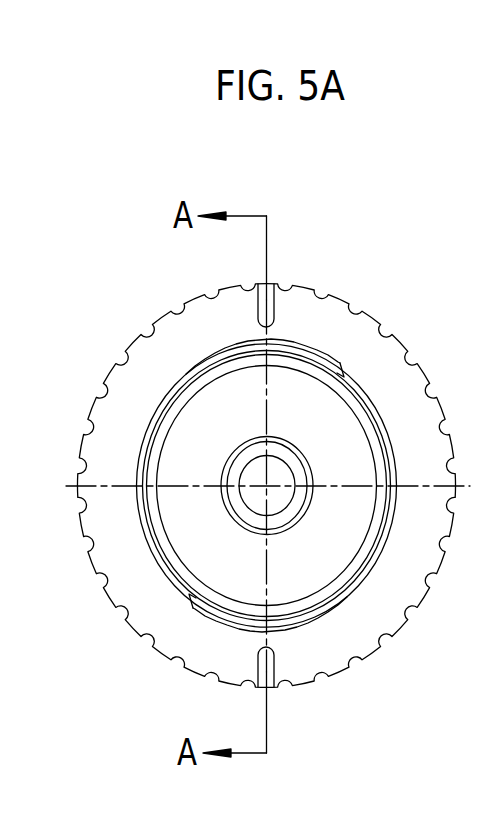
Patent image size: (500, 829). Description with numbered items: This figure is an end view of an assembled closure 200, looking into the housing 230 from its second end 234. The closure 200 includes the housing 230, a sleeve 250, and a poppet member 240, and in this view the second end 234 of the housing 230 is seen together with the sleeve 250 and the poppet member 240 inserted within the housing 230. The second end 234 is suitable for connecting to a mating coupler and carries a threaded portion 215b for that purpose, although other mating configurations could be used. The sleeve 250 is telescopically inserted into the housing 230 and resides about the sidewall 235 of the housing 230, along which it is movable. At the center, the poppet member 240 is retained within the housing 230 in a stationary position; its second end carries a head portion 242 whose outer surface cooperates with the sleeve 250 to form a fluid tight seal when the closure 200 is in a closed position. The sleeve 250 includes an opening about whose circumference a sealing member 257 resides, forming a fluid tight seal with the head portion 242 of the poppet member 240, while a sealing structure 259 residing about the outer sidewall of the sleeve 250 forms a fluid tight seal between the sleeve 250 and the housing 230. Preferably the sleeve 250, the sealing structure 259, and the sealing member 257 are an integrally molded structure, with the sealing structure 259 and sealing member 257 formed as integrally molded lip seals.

The closure 200 is at (332, 265).
The housing 230 is at (175, 318).
The sidewall 235 is at (178, 387).
The second end 234 is at (144, 534).
The sleeve 250 is at (152, 503).
The threaded portion 215b is at (327, 348).
The sealing structure 259 is at (316, 610).
The head portion 242 is at (304, 465).
The sealing member 257 is at (231, 465).
The poppet member 240 is at (237, 520).